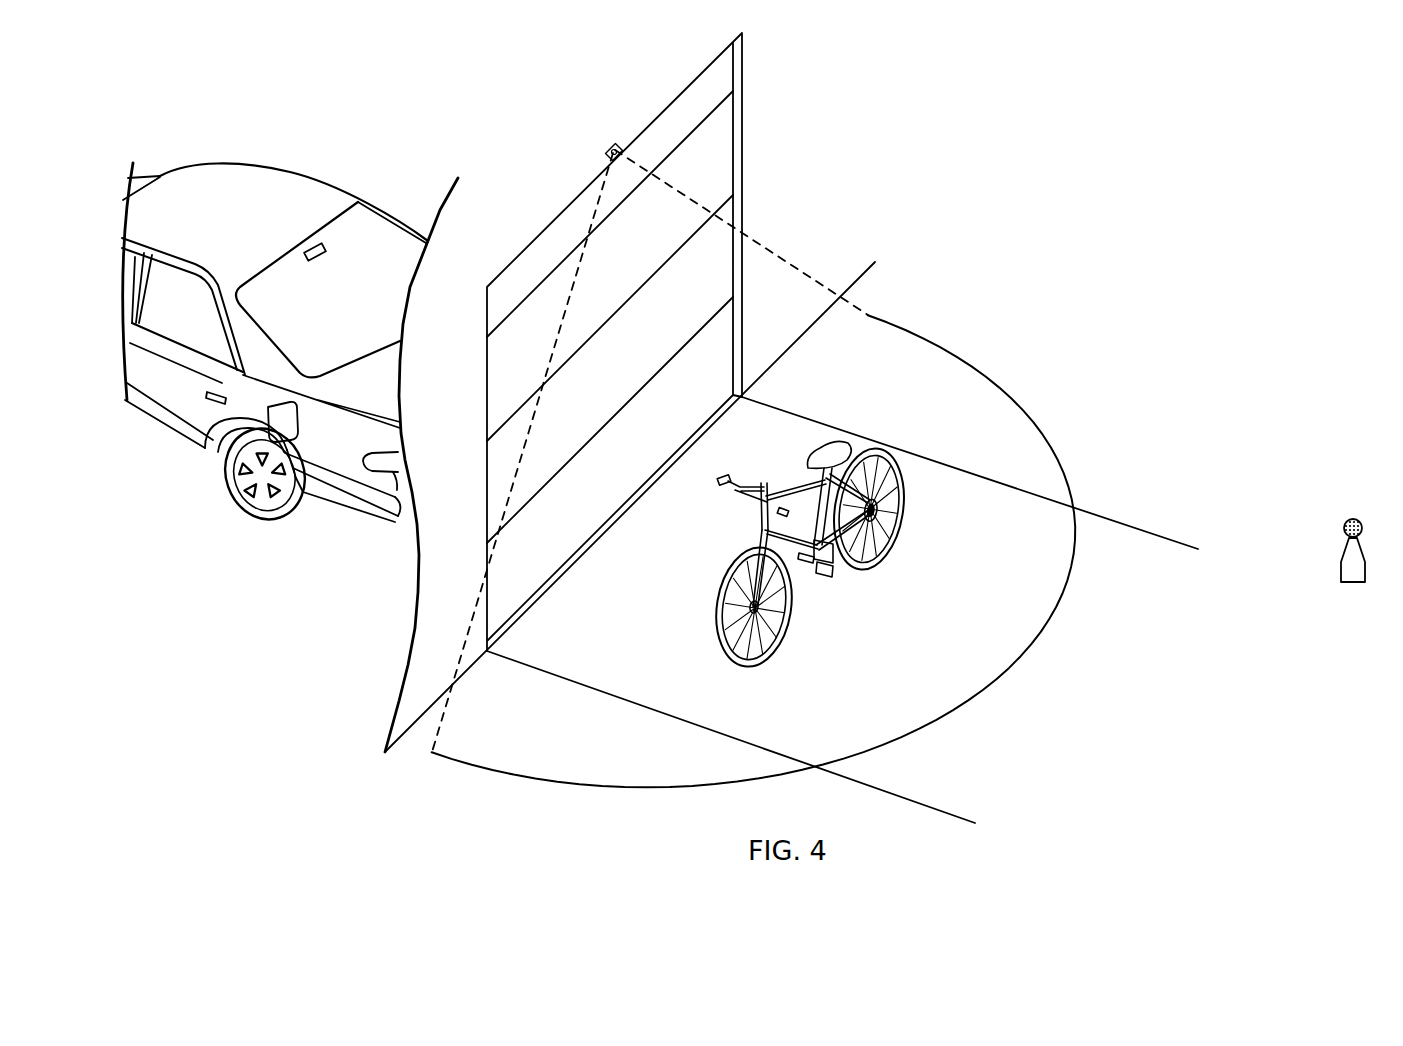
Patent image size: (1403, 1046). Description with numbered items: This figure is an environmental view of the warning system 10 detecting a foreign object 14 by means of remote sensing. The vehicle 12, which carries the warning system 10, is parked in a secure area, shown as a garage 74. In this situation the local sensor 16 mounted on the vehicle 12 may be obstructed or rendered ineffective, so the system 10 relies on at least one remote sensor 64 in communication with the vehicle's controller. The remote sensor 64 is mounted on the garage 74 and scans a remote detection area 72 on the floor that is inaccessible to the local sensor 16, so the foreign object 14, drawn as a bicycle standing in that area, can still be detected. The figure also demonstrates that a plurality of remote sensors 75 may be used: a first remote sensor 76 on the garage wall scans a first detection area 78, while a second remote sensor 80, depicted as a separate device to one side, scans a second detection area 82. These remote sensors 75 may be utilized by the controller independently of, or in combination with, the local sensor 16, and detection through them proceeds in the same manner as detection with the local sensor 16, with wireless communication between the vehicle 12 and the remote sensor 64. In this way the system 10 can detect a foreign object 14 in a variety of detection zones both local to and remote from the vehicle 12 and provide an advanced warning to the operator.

The warning system 10 is at (796, 98).
The vehicle 12 is at (296, 184).
The foreign object 14 is at (836, 440).
The local sensor 16 is at (328, 246).
The remote sensor 64 is at (556, 126).
The remote detection area 72 is at (753, 468).
The garage 74 is at (705, 262).
The remote sensors 75 is at (622, 152).
The first remote sensor 76 is at (614, 144).
The first detection area 78 is at (985, 370).
The second remote sensor 80 is at (1343, 530).
The second detection area 82 is at (1214, 253).